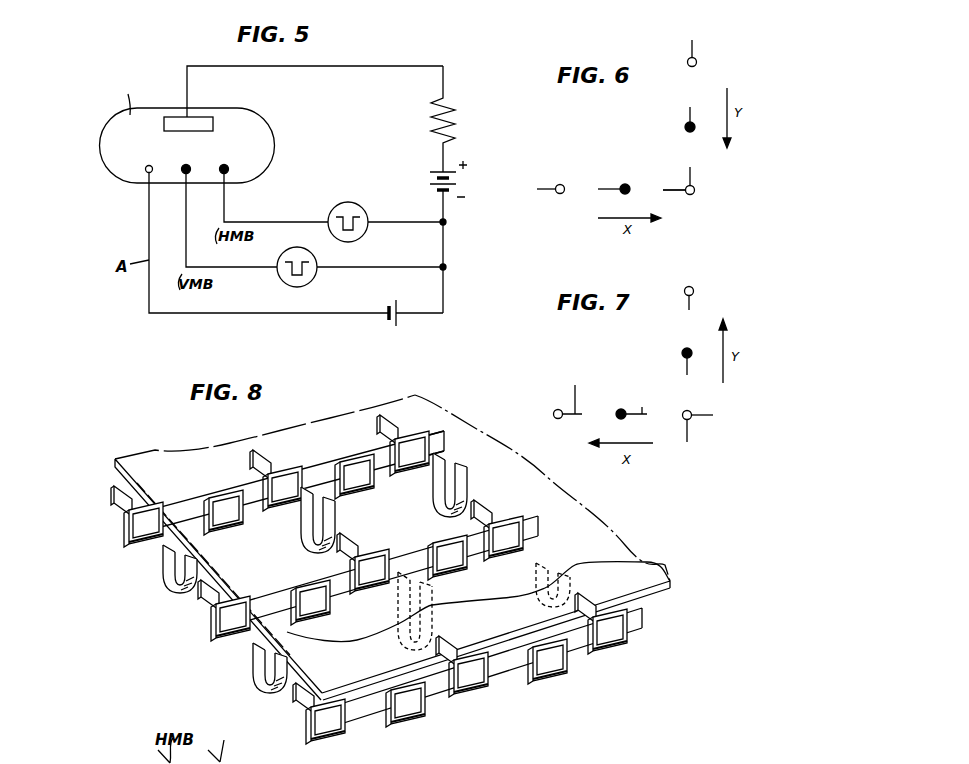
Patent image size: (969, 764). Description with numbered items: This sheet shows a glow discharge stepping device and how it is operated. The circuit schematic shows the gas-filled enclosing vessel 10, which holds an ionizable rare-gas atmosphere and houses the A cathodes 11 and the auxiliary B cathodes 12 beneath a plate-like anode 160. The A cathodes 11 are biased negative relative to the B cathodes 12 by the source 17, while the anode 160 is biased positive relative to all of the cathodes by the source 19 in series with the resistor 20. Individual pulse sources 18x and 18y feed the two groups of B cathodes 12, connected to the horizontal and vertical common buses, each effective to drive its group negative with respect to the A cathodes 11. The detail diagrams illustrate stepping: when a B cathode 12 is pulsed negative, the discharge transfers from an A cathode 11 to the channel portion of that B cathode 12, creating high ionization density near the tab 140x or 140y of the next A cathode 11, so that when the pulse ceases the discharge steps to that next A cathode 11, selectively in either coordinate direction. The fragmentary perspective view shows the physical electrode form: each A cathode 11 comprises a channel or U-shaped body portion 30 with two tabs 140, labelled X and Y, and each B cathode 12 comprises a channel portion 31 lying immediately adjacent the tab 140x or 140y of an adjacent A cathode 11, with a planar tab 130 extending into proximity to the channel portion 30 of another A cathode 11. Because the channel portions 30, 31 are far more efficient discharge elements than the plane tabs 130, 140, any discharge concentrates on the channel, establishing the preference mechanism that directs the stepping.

In FIG. 5, the enclosing vessel 10 is at (115, 160).
In FIG. 5, the A cathode 11 is at (147, 175).
In FIG. 6, the A cathode 11 is at (698, 56).
In FIG. 7, the A cathode 11 is at (693, 287).
In FIG. 8, the A cathode 11 is at (376, 591).
In FIG. 5, the B cathode 12 is at (188, 173).
In FIG. 6, the B cathode 12 is at (624, 184).
In FIG. 7, the B cathode 12 is at (618, 410).
In FIG. 8, the B cathode 12 is at (363, 490).
In FIG. 5, the source 17 is at (385, 323).
In FIG. 5, the pulse source 18x is at (352, 204).
In FIG. 5, the pulse source 18y is at (313, 280).
In FIG. 5, the source 19 is at (428, 177).
In FIG. 5, the resistor 20 is at (462, 120).
In FIG. 8, the channel or U-shaped body portion 30 is at (414, 464).
In FIG. 8, the channel or U-shaped body portion 31 is at (417, 716).
In FIG. 6, the planar tab 130 is at (712, 101).
In FIG. 7, the planar tab 130 is at (684, 370).
In FIG. 8, the planar tab 130 is at (375, 446).
In FIG. 7, the tab 140 is at (571, 390).
In FIG. 6, the X tab 140x is at (684, 193).
In FIG. 7, the X tab 140x is at (705, 417).
In FIG. 8, the X tab 140x is at (450, 453).
In FIG. 6, the Y tab 140y is at (692, 178).
In FIG. 7, the Y tab 140y is at (691, 302).
In FIG. 8, the Y tab 140y is at (385, 426).
In FIG. 5, the anode 160 is at (207, 122).
In FIG. 8, the anode 160 is at (643, 573).